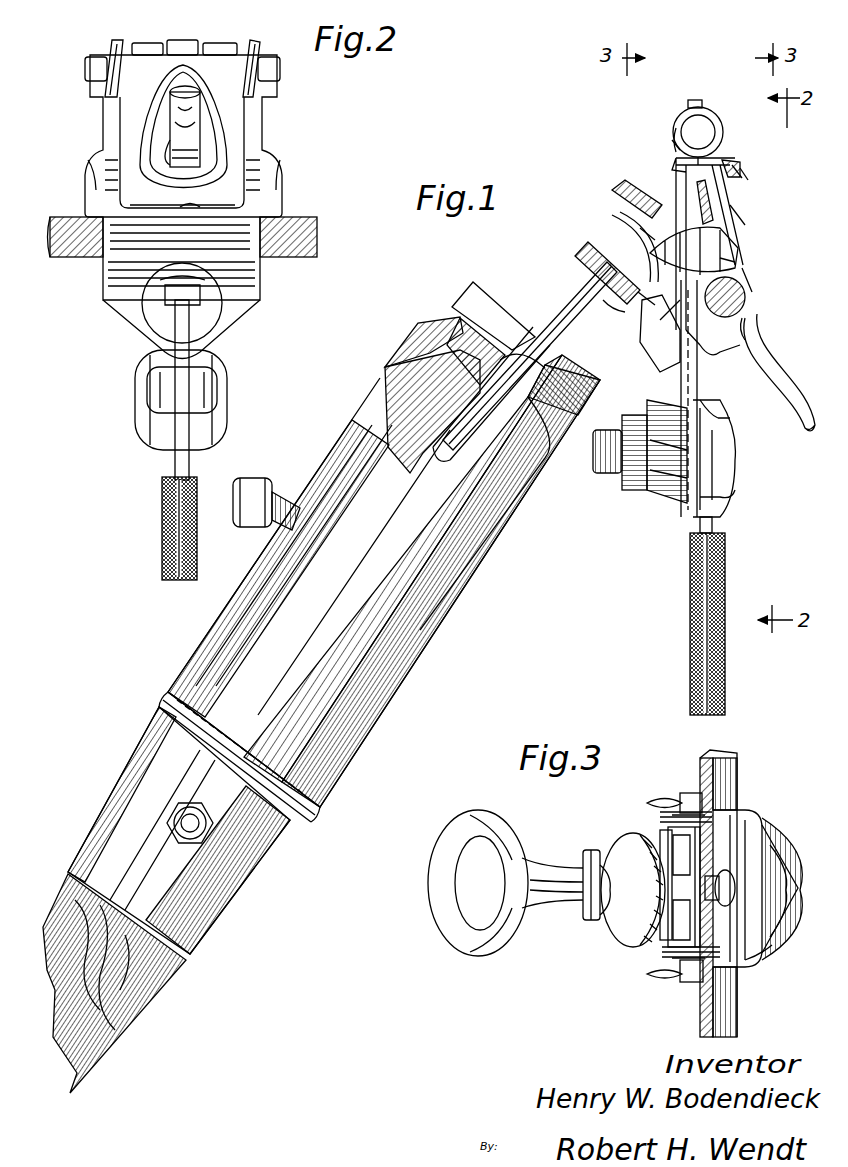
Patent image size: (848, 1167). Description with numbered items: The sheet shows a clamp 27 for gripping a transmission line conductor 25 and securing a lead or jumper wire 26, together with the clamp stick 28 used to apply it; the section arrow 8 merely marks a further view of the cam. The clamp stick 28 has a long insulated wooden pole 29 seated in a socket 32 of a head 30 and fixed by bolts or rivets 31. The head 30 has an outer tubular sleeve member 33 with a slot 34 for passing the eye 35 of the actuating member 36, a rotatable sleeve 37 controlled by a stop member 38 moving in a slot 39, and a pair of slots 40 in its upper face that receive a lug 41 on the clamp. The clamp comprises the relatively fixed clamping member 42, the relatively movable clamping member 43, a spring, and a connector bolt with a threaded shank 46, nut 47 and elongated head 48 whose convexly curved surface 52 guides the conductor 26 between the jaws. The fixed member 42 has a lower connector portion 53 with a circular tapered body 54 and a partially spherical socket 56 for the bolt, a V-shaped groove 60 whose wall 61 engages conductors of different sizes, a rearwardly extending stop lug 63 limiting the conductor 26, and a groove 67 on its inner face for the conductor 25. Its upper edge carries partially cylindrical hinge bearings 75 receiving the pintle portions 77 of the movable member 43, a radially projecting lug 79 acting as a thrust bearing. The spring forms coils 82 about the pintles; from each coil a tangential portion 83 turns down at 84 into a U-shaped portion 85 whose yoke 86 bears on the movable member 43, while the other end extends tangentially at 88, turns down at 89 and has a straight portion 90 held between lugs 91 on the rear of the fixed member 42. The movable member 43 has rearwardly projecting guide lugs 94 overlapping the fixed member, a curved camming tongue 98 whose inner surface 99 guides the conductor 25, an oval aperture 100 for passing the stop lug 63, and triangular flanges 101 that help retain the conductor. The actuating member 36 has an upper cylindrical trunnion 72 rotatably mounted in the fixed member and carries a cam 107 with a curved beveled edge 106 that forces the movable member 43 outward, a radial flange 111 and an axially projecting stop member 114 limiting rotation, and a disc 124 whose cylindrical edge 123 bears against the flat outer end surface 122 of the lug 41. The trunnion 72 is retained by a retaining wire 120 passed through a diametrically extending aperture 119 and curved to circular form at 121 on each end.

In FIG. 1, the section line 8 is at (640, 135).
In FIG. 2, the transmission line conductor 25 is at (297, 222).
In FIG. 1, the transmission line conductor 25 is at (735, 288).
In FIG. 3, the transmission line conductor 25 is at (740, 770).
In FIG. 1, the lead or jumper wire 26 is at (727, 594).
In FIG. 1, the clamp 27 is at (742, 220).
In FIG. 1, the clamp stick 28 is at (455, 628).
In FIG. 1, the insulated wooden pole 29 is at (128, 1000).
In FIG. 1, the head 30 is at (470, 577).
In FIG. 1, the bolts or rivets 31 is at (182, 834).
In FIG. 1, the socket 32 is at (248, 853).
In FIG. 1, the outer tubular sleeve member 33 is at (418, 347).
In FIG. 1, the slot 34 is at (522, 332).
In FIG. 1, the eye 35 is at (500, 322).
In FIG. 3, the eye 35 is at (437, 913).
In FIG. 1, the actuating member 36 is at (577, 306).
In FIG. 3, the actuating member 36 is at (560, 869).
In FIG. 1, the rotatable sleeve 37 is at (405, 402).
In FIG. 2, the stop member 38 is at (263, 478).
In FIG. 2, the slot 39 is at (268, 520).
In FIG. 1, the slots 40 is at (470, 302).
In FIG. 1, the lug 41 is at (660, 334).
In FIG. 2, the fixed clamping member 42 is at (160, 282).
In FIG. 2, the movable clamping member 43 is at (118, 275).
In FIG. 1, the movable clamping member 43 is at (740, 267).
In FIG. 3, the movable clamping member 43 is at (760, 832).
In FIG. 1, the threaded shank 46 is at (603, 475).
In FIG. 1, the nut 47 is at (636, 489).
In FIG. 2, the head 48 is at (170, 432).
In FIG. 1, the convexly curved surface 52 is at (738, 454).
In FIG. 1, the connector portion 53 is at (660, 422).
In FIG. 2, the tapered body 54 is at (135, 395).
In FIG. 1, the tapered body 54 is at (668, 494).
In FIG. 2, the partially spherical socket 56 is at (215, 391).
In FIG. 1, the V-shaped groove 60 is at (712, 499).
In FIG. 1, the wall 61 is at (720, 418).
In FIG. 2, the stop lug 63 is at (215, 290).
In FIG. 1, the stop lug 63 is at (720, 355).
In FIG. 1, the groove 67 is at (672, 322).
In FIG. 2, the cylindrical trunnion portion 72 is at (190, 90).
In FIG. 1, the cylindrical trunnion portion 72 is at (746, 178).
In FIG. 3, the cylindrical trunnion portion 72 is at (733, 888).
In FIG. 2, the hinge bearings 75 is at (147, 43).
In FIG. 1, the hinge bearings 75 is at (674, 122).
In FIG. 3, the hinge bearings 75 is at (665, 834).
In FIG. 2, the pintle portions 77 is at (85, 67).
In FIG. 1, the pintle portions 77 is at (703, 134).
In FIG. 3, the pintle portions 77 is at (690, 795).
In FIG. 2, the radially projecting lug 79 is at (184, 41).
In FIG. 1, the radially projecting lug 79 is at (697, 100).
In FIG. 3, the radially projecting lug 79 is at (668, 927).
In FIG. 2, the coils 82 is at (118, 42).
In FIG. 1, the coils 82 is at (714, 114).
In FIG. 3, the coils 82 is at (705, 810).
In FIG. 1, the tangential portion 83 is at (676, 145).
In FIG. 1, the downwardly turned portion 84 is at (672, 167).
In FIG. 2, the U-shaped portion 85 is at (244, 162).
In FIG. 1, the U-shaped portion 85 is at (740, 233).
In FIG. 2, the yoke 86 is at (196, 210).
In FIG. 1, the tangential end portion 88 is at (730, 160).
In FIG. 1, the downwardly turned portion 89 is at (740, 172).
In FIG. 1, the straight portion 90 is at (680, 285).
In FIG. 3, the lugs 91 is at (668, 806).
In FIG. 2, the guide lugs 94 is at (88, 188).
In FIG. 1, the guide lugs 94 is at (736, 253).
In FIG. 3, the guide lugs 94 is at (647, 803).
In FIG. 1, the camming tongue 98 is at (768, 400).
In FIG. 3, the camming tongue 98 is at (778, 845).
In FIG. 3, the inner surface 99 is at (775, 948).
In FIG. 3, the oval aperture 100 is at (772, 882).
In FIG. 1, the flanges 101 is at (742, 340).
In FIG. 1, the curved beveled edge 106 is at (618, 186).
In FIG. 3, the curved beveled edge 106 is at (626, 848).
In FIG. 1, the cam 107 is at (626, 212).
In FIG. 3, the cam 107 is at (625, 932).
In FIG. 1, the radial flange 111 is at (640, 250).
In FIG. 1, the stop member 114 is at (714, 200).
In FIG. 2, the diametrically extending aperture 119 is at (160, 124).
In FIG. 2, the retaining wire 120 is at (195, 130).
In FIG. 2, the circular ends 121 is at (200, 117).
In FIG. 1, the flat outer end surface 122 is at (640, 303).
In FIG. 1, the cylindrical edge 123 is at (590, 256).
In FIG. 1, the disc 124 is at (612, 330).
In FIG. 3, the disc 124 is at (592, 904).